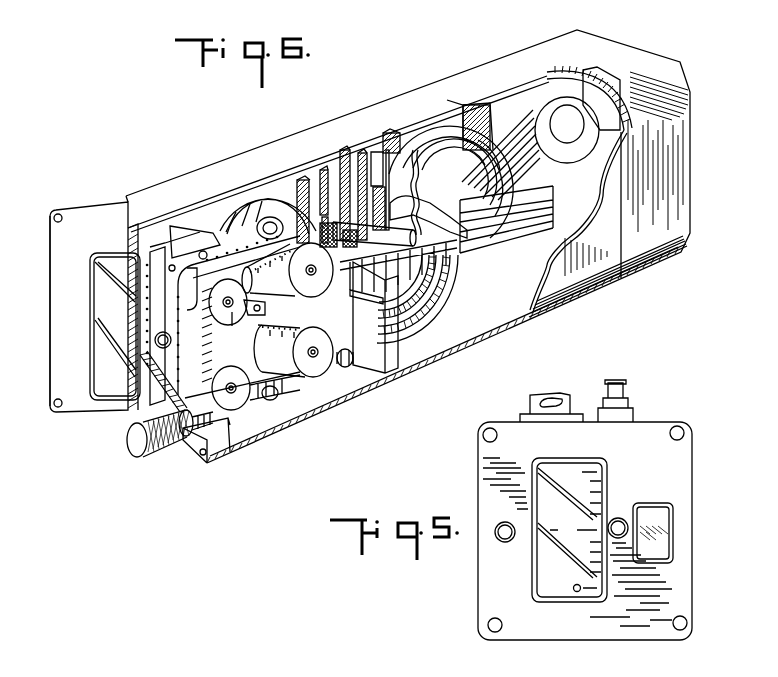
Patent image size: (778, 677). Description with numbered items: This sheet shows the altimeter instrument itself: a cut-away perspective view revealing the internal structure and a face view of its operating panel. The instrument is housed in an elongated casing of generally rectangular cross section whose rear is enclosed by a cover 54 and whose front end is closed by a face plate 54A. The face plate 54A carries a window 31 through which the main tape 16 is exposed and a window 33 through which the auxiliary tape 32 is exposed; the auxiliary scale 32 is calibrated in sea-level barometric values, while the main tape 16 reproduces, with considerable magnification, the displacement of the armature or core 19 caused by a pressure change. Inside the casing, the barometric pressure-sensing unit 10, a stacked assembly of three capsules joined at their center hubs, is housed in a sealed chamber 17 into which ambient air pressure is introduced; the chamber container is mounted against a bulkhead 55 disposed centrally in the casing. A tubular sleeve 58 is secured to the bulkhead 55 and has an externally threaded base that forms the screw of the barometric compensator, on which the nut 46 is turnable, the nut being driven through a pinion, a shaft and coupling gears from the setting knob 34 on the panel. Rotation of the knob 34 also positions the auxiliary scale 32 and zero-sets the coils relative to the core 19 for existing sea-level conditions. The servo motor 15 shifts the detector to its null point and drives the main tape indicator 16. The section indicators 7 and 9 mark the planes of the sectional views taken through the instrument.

In FIG. 6, the section line 7- 7 is at (693, 49).
In FIG. 6, the section line 9- 9 is at (27, 273).
In FIG. 6, the barometric pressure-sensing unit 10 is at (442, 140).
In FIG. 6, the servo motor 15 is at (553, 113).
In FIG. 5, the main tape indicator 16 is at (597, 472).
In FIG. 6, the gas-tight chamber 17 is at (483, 277).
In FIG. 6, the armature 19 is at (356, 264).
In FIG. 6, the window 31 is at (107, 378).
In FIG. 5, the window 31 is at (550, 567).
In FIG. 6, the auxiliary scale 32 is at (165, 368).
In FIG. 5, the auxiliary scale 32 is at (667, 512).
In FIG. 5, the window 33 is at (667, 540).
In FIG. 6, the setting knob 34 is at (147, 458).
In FIG. 6, the nut 46 is at (380, 143).
In FIG. 6, the cover 54 is at (684, 206).
In FIG. 6, the face plate 54A is at (60, 355).
In FIG. 5, the face plate 54A is at (558, 628).
In FIG. 6, the bulkhead 55 is at (387, 133).
In FIG. 6, the tubular sleeve 58 is at (70, 220).